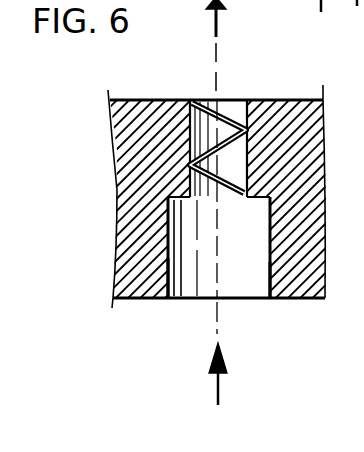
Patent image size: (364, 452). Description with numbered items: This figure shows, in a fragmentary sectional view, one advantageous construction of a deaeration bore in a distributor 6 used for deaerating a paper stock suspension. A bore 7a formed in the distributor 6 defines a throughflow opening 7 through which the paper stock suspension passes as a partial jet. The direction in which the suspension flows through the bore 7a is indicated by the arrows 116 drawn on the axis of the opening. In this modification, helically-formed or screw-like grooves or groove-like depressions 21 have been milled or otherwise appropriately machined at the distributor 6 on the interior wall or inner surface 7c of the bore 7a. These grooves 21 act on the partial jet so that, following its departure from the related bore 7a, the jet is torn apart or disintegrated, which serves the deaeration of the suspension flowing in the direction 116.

The distributor 6 is at (128, 133).
The throughflow opening 7 is at (242, 283).
The bore 7a is at (168, 261).
The interior wall of the bore 7c is at (270, 265).
The helically-formed grooves 21 is at (232, 99).
The flow direction arrows 116 is at (218, 22).